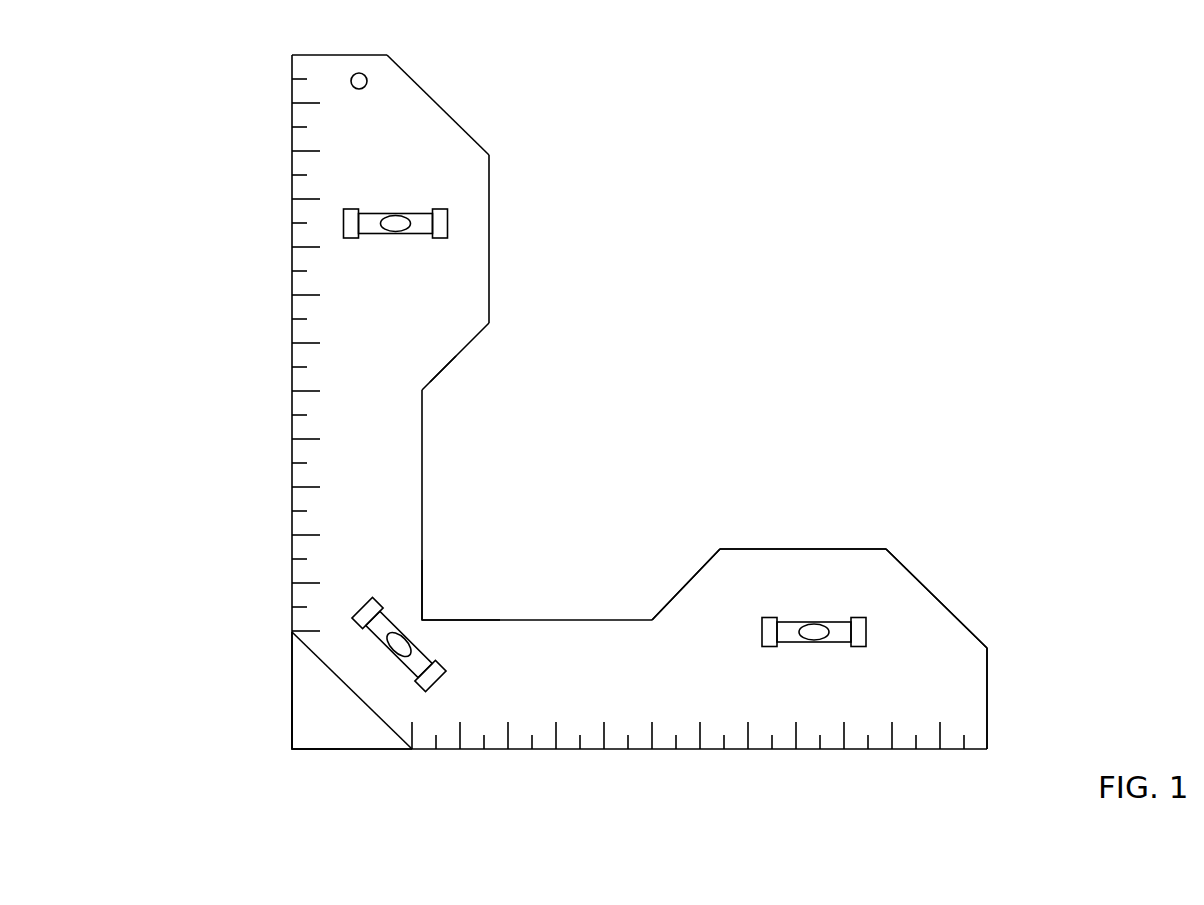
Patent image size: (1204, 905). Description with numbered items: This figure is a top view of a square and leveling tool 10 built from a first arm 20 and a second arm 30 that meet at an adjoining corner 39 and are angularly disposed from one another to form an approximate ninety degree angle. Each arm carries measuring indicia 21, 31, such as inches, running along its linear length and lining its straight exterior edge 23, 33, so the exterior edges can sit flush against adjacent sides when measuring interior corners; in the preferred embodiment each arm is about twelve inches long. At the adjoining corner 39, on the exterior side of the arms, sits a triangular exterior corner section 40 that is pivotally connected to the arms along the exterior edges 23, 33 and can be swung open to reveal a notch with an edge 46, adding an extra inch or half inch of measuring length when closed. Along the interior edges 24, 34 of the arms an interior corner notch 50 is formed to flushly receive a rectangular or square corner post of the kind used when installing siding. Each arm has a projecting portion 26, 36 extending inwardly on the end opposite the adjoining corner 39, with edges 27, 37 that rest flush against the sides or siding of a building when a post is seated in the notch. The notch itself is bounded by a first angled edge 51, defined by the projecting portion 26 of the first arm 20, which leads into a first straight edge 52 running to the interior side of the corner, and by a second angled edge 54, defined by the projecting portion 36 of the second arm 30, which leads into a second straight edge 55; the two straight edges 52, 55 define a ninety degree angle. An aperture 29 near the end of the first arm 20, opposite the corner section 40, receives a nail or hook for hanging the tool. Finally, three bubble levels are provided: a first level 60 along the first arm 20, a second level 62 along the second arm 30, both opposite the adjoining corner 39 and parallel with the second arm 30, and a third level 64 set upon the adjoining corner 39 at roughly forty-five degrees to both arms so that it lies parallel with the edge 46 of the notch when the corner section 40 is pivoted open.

The square and leveling tool 10 is at (634, 431).
The first arm 20 is at (368, 368).
The measuring indicia 21 is at (312, 392).
The exterior edge 23 is at (290, 498).
The interior edge 24 is at (484, 348).
The projecting portion 26 is at (468, 273).
The edge 27 is at (489, 290).
The aperture 29 is at (368, 73).
The second arm 30 is at (650, 672).
The measuring indicia 31 is at (605, 736).
The exterior edge 33 is at (838, 750).
The interior edge 34 is at (697, 556).
The projecting portion 36 is at (822, 584).
The edge 37 is at (853, 549).
The adjoining corner 39 is at (368, 682).
The exterior corner section 40 is at (292, 742).
The edge of the notch 46 is at (331, 672).
The interior corner notch 50 is at (559, 512).
The first angled edge 51 is at (443, 368).
The first straight edge 52 is at (423, 534).
The second angled edge 54 is at (677, 588).
The second straight edge 55 is at (490, 620).
The first level 60 is at (420, 213).
The second level 62 is at (836, 642).
The third level 64 is at (423, 650).